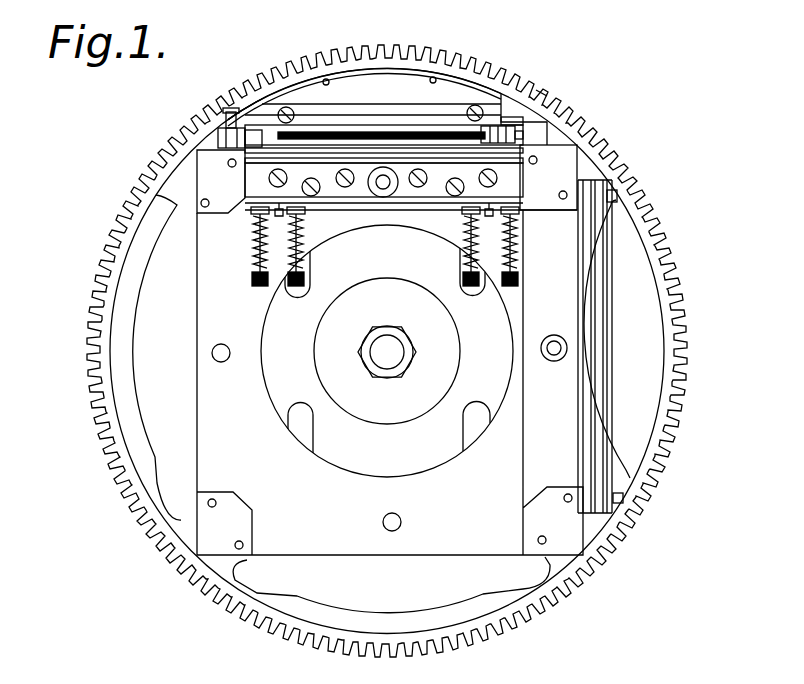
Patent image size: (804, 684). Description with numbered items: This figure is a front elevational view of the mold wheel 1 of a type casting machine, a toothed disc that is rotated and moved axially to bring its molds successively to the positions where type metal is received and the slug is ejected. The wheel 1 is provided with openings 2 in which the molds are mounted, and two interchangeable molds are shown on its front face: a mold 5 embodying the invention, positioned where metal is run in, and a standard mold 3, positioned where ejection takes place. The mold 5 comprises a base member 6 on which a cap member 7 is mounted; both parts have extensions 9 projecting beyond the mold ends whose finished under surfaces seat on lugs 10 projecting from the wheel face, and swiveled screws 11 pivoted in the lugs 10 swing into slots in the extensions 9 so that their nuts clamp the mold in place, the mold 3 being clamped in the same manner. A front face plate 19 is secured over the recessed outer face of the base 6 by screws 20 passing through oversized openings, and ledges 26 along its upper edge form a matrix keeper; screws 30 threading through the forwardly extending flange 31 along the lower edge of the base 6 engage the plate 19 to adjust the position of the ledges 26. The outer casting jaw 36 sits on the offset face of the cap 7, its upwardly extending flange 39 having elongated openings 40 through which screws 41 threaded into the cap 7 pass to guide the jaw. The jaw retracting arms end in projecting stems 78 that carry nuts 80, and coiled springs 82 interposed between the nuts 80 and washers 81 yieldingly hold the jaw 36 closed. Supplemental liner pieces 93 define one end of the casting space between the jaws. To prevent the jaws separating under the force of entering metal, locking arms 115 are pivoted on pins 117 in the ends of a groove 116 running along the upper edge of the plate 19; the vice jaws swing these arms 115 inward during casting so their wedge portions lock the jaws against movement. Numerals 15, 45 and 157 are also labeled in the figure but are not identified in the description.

The mold wheel 1 is at (114, 240).
The openings 2 is at (158, 397).
The mold 3 is at (640, 312).
The mold 5 is at (537, 90).
The base member 6 is at (268, 162).
The cap member 7 is at (311, 88).
The extensions 9 is at (220, 130).
The lugs 10 is at (203, 180).
The swiveled screws 11 is at (520, 130).
The shaft 15 is at (292, 167).
The outer face plate 19 is at (390, 198).
The screws 20 is at (333, 197).
The ledges 26 is at (456, 158).
The screws 30 is at (262, 233).
The forwardly extending flange 31 is at (518, 203).
The outer casting jaw 36 is at (401, 93).
The upwardly extending flange 39 is at (363, 104).
The elongated openings 40 is at (501, 107).
The screws 41 is at (231, 108).
The contact bar 45 is at (298, 168).
The projecting stems 78 is at (255, 270).
The nuts 80 is at (252, 286).
The washer 81 is at (252, 215).
The coiled springs 82 is at (257, 253).
The supplemental liner pieces 93 is at (296, 116).
The arms 115 is at (258, 176).
The groove 116 is at (318, 174).
The pins 117 is at (247, 167).
The pin hole 157 is at (228, 163).